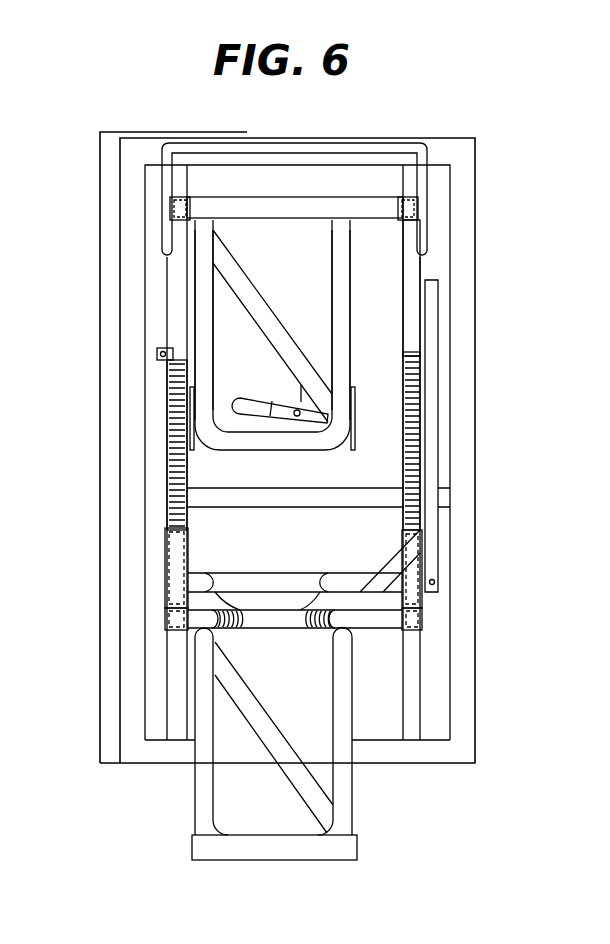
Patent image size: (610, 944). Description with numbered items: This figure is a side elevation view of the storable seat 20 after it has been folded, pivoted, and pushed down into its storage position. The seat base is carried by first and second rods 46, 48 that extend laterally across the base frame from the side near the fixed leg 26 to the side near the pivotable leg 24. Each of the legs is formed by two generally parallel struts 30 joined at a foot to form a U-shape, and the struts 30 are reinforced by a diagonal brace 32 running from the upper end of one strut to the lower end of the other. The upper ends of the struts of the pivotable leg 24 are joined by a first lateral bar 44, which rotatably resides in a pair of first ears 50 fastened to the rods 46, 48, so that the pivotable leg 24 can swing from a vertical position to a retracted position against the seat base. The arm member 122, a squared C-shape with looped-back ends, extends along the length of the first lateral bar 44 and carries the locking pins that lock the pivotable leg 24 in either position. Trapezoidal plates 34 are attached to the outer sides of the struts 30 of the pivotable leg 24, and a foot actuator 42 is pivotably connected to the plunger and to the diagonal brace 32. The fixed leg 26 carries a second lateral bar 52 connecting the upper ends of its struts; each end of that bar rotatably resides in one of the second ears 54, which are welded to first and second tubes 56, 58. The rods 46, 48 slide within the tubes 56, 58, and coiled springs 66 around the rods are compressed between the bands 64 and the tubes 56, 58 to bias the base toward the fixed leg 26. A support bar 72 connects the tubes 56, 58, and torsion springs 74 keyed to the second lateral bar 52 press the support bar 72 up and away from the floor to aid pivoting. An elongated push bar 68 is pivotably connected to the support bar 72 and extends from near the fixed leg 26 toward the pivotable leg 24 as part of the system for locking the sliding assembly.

The storable seat 20 is at (500, 127).
The pivotable leg 24 is at (325, 283).
The fixed leg 26 is at (360, 822).
The struts 30 is at (203, 328).
The diagonal brace 32 is at (278, 333).
The trapezoidal plates 34 is at (357, 432).
The foot actuator 42 is at (255, 403).
The first lateral bar 44 is at (323, 207).
The first rod 46 is at (411, 270).
The second rod 48 is at (172, 310).
The first ears 50 is at (178, 208).
The second lateral bar 52 is at (378, 620).
The second ears 54 is at (167, 617).
The first tube 56 is at (423, 532).
The second tube 58 is at (177, 560).
The bands 64 is at (415, 350).
The coiled springs 66 is at (175, 437).
The push bar 68 is at (430, 375).
The support bar 72 is at (260, 578).
The torsion springs 74 is at (308, 632).
The arm member 122 is at (397, 142).